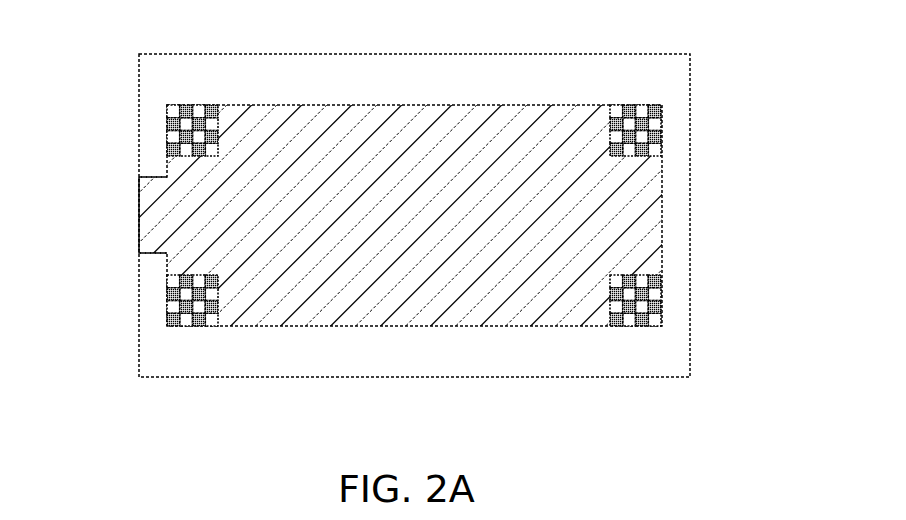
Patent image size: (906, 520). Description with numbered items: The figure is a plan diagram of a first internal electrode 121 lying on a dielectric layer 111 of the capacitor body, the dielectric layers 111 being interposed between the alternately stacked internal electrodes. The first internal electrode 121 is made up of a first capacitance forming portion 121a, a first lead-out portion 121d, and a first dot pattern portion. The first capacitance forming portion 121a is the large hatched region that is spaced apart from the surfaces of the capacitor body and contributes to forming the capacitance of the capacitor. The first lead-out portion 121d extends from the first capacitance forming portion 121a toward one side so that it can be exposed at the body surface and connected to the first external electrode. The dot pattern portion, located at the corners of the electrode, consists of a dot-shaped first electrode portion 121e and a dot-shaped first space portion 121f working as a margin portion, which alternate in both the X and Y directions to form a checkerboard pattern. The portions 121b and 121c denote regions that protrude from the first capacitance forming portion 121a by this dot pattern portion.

The dielectric layer 111 is at (585, 80).
The first internal electrode 121 is at (446, 174).
The first capacitance forming portion 121a is at (425, 133).
The protruding portion of first capacitance forming portion 121b is at (198, 200).
The protruding portion of first capacitance forming portion 121c is at (633, 184).
The first lead-out portion 121d is at (153, 228).
The first electrode portion 121e is at (213, 110).
The first space portion 121f is at (198, 110).